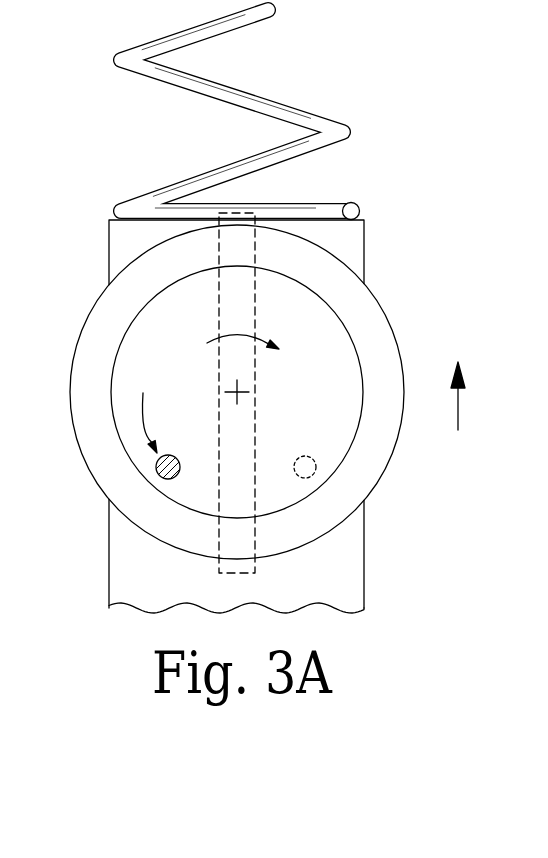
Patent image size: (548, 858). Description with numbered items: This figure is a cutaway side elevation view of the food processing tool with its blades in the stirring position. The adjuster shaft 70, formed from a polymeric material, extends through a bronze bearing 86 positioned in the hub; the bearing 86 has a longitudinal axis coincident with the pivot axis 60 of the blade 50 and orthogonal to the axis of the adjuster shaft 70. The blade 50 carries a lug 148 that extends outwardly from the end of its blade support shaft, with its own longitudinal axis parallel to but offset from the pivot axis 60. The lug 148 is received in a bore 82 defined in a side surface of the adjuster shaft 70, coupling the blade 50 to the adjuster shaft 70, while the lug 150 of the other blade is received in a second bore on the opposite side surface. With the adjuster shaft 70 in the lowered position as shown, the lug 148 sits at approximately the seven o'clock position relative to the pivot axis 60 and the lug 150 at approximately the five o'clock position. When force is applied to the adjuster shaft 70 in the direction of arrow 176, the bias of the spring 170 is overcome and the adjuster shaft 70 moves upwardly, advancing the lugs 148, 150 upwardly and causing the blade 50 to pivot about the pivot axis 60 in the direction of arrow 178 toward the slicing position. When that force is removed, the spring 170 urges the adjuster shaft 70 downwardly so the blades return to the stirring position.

The blade 50 is at (217, 318).
The pivot axis 60 is at (237, 384).
The adjuster shaft 70 is at (345, 557).
The bore 82 is at (147, 410).
The bearing 86 is at (377, 333).
The lug 148 is at (168, 455).
The lug 150 is at (307, 457).
The spring 170 is at (287, 113).
The arrow 176 is at (460, 405).
The arrow 178 is at (233, 335).